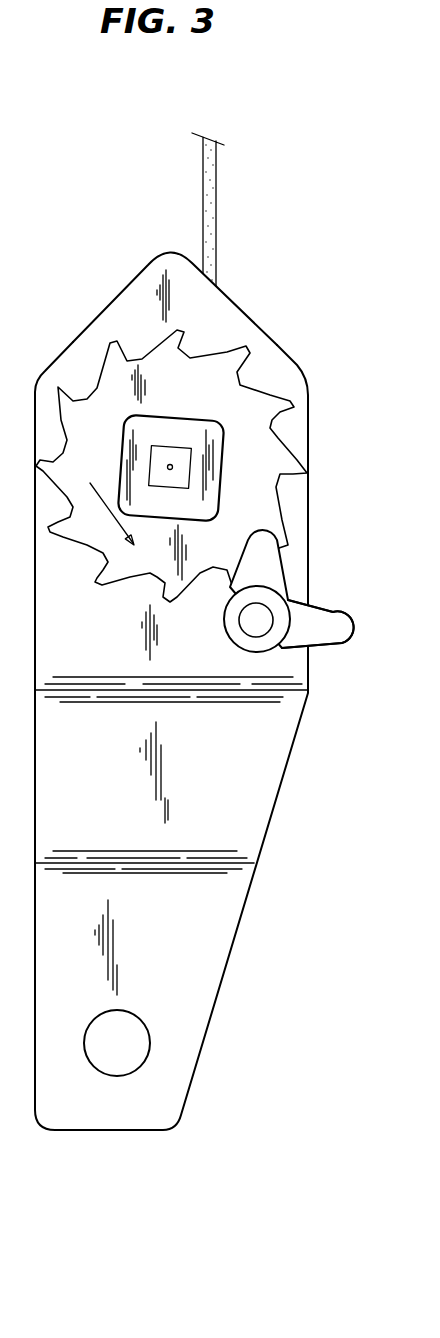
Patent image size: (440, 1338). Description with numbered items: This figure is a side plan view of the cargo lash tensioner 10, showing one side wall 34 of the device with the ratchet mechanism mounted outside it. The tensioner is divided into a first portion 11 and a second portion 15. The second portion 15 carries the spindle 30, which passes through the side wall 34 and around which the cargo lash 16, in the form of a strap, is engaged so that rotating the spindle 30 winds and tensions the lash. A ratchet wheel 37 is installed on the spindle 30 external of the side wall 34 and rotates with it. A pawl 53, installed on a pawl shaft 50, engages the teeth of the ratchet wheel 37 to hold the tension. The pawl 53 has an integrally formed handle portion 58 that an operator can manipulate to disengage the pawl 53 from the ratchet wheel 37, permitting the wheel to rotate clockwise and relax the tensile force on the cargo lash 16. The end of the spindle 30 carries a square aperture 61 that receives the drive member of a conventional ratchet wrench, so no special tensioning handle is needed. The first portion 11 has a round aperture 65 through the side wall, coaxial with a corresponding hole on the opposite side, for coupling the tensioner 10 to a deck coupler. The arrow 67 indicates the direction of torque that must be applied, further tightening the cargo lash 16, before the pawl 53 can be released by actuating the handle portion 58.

The cargo lash tensioner 10 is at (344, 768).
The first portion 11 is at (238, 991).
The second portion 15 is at (248, 300).
The cargo lash 16 is at (203, 238).
The spindle 30 is at (222, 443).
The side wall 34 is at (135, 298).
The ratchet wheel 37 is at (100, 404).
The pawl shaft 50 is at (250, 615).
The pawl 53 is at (276, 566).
The handle portion 58 is at (323, 623).
The square aperture 61 is at (180, 448).
The aperture 65 is at (130, 1040).
The arrow 67 is at (100, 500).